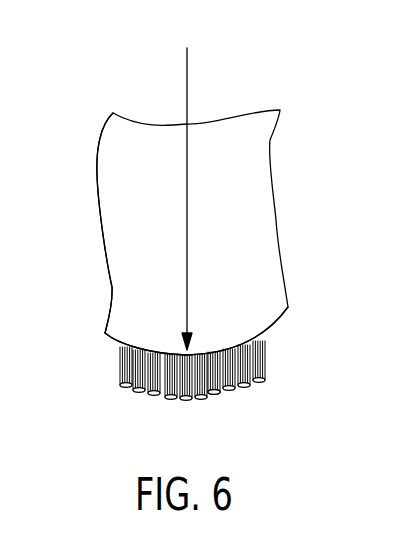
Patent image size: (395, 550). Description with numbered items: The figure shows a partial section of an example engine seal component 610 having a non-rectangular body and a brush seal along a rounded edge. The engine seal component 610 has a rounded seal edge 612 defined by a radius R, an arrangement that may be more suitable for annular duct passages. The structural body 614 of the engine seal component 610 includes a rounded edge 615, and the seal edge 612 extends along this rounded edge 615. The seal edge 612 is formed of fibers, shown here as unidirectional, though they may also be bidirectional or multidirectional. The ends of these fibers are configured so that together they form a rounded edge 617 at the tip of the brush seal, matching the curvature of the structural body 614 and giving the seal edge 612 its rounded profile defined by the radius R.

The engine seal component 610 is at (126, 78).
The radius R is at (187, 98).
The structural body 614 is at (120, 207).
The rounded edge 615 is at (228, 350).
The seal edge 612 is at (137, 392).
The rounded edge 617 is at (209, 393).